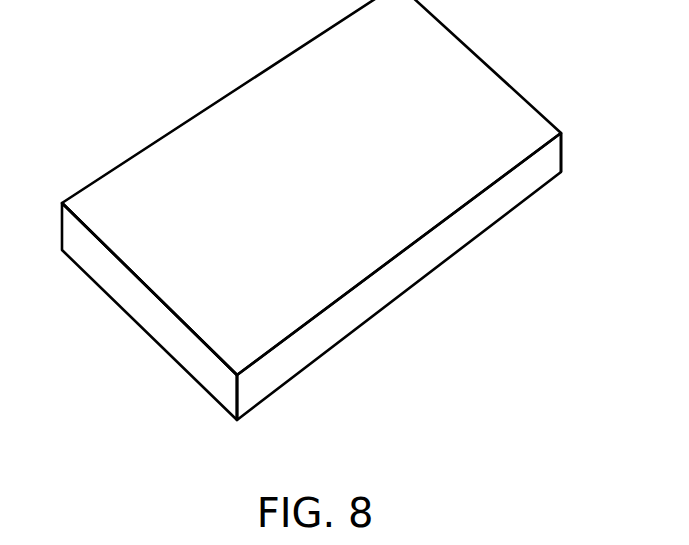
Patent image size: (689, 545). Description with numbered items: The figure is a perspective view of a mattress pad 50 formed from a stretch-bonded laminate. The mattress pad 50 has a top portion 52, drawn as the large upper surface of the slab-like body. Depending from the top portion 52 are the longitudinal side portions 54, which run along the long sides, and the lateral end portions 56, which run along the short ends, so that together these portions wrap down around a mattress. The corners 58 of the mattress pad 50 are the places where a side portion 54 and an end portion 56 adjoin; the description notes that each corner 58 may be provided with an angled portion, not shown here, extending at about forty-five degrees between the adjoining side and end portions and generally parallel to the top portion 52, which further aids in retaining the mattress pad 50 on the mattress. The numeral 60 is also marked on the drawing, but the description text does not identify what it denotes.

The mattress pad 50 is at (331, 231).
The top portion 52 is at (258, 100).
The depending longitudinal side portions 54 is at (473, 225).
The depending lateral end portions 56 is at (155, 317).
The corners 58 is at (563, 143).
The upper front edge 60 is at (112, 252).